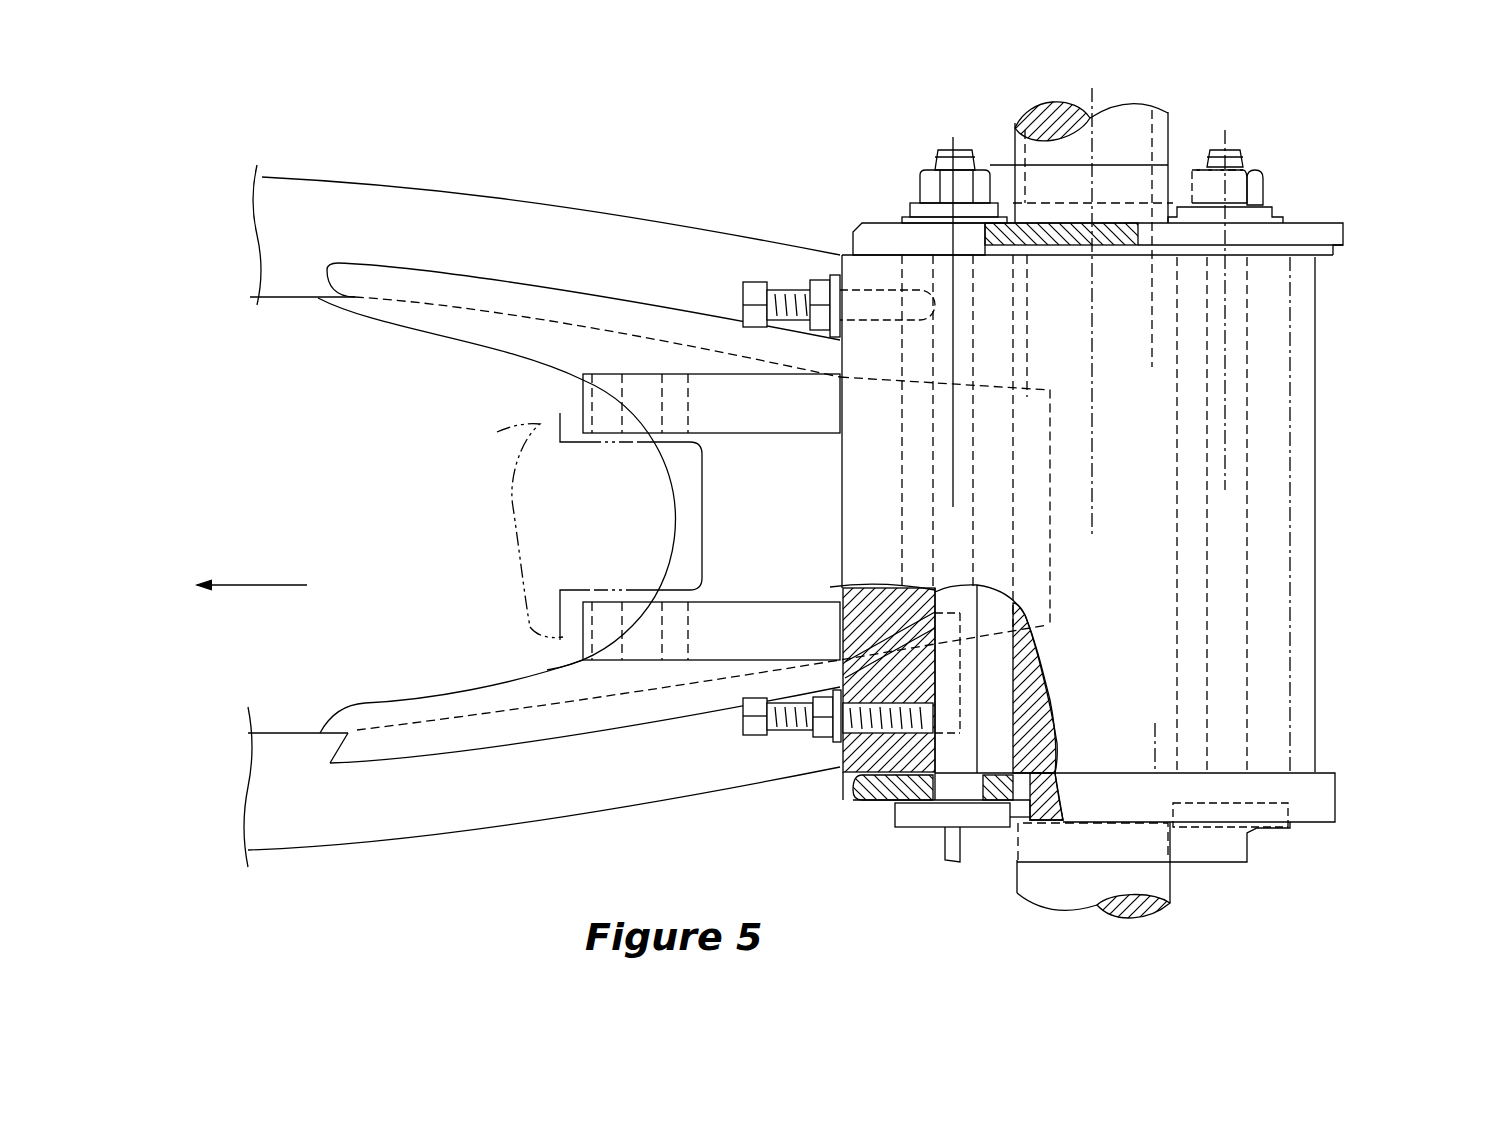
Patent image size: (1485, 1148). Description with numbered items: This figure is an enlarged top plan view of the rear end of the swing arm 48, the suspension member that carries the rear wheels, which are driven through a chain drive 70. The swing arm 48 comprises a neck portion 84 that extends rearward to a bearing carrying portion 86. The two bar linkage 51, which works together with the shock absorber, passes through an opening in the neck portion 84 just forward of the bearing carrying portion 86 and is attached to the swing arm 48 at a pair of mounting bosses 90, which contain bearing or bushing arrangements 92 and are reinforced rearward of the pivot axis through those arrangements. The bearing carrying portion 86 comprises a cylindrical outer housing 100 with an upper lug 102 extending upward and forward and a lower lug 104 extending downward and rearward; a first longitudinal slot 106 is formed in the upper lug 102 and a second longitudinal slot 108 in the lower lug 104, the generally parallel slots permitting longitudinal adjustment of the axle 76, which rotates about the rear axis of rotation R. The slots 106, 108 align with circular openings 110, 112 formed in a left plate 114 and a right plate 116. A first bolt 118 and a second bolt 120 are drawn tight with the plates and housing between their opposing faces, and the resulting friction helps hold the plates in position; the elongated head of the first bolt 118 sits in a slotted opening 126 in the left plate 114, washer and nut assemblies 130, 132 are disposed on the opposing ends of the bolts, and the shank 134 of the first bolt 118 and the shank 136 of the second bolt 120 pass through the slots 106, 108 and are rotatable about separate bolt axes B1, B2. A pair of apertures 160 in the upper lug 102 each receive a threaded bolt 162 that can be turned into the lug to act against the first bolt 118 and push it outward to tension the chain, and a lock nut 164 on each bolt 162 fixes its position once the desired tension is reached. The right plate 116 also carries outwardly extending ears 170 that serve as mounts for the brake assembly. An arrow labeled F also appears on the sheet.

The swing arm 48 is at (522, 163).
The chain drive 70 is at (383, 156).
The neck portion 84 is at (600, 230).
The bearing or bushing arrangements 92 is at (614, 385).
The two bar linkage 51 is at (587, 403).
The mounting bosses 90 is at (737, 415).
The upper lug 102 is at (858, 413).
The outer housing 100 is at (1282, 612).
The lower lug 104 is at (1310, 585).
The second longitudinal slot 108 is at (1290, 658).
The shank 136 is at (1247, 560).
The bearing carrying portion 86 is at (1353, 325).
The rear axis of rotation R is at (1097, 503).
The bolt axis B1 is at (953, 487).
The bolt axis B2 is at (1223, 412).
The right plate 116 is at (870, 235).
The outwardly extending ears 170 is at (1338, 235).
The opening 112 is at (1237, 250).
The axle 76 is at (1023, 897).
The opening 110 is at (942, 217).
The washer and nut assembly 130 is at (945, 177).
The washer and nut assembly 132 is at (1257, 183).
The shank 134 is at (840, 617).
The first longitudinal slot 106 is at (1015, 673).
The left plate 114 is at (1327, 800).
The second bolt 120 is at (1277, 833).
The first bolt 118 is at (907, 832).
The slotted opening 126 is at (870, 813).
The apertures 160 is at (860, 292).
The bolt 162 is at (750, 293).
The lock nut 164 is at (820, 290).
The forward direction F is at (260, 580).